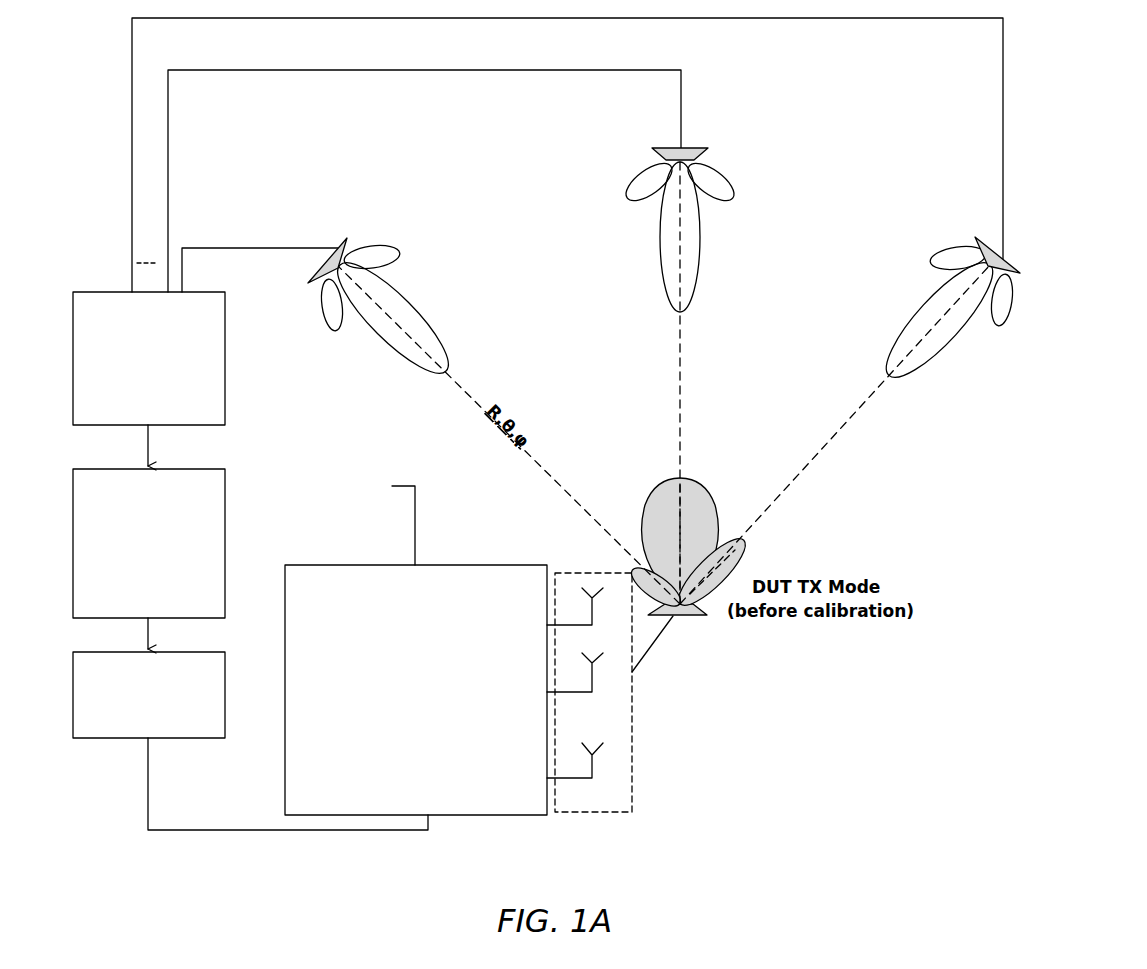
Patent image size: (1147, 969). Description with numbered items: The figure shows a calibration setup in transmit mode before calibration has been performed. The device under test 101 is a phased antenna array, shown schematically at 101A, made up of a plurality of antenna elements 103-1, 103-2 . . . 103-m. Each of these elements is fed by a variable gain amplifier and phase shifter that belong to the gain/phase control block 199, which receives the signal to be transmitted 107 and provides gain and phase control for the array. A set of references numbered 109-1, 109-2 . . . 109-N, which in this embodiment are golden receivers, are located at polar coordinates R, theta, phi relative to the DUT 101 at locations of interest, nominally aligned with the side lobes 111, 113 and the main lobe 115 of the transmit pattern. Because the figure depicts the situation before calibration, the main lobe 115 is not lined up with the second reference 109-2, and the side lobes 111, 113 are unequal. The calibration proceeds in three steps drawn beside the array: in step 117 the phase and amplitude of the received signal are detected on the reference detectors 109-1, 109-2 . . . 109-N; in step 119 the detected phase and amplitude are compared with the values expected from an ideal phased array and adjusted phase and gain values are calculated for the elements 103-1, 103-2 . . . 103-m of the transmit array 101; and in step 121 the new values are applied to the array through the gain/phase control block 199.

The step 117 is at (193, 366).
The step 119 is at (193, 561).
The step 121 is at (193, 708).
The gain/phase control block 199 is at (398, 716).
The signal to be transmitted 107 is at (414, 500).
The phased antenna array 101A is at (633, 773).
The antenna element 103-1 is at (592, 590).
The antenna element 103-2 is at (592, 672).
The antenna element 103-m is at (592, 780).
The device under test 101 is at (705, 620).
The side lobe 111 is at (637, 577).
The side lobe 113 is at (745, 562).
The main lobe 115 is at (692, 495).
The reference 109-1 is at (350, 245).
The reference 109-2 is at (697, 148).
The reference 109-N is at (1005, 256).